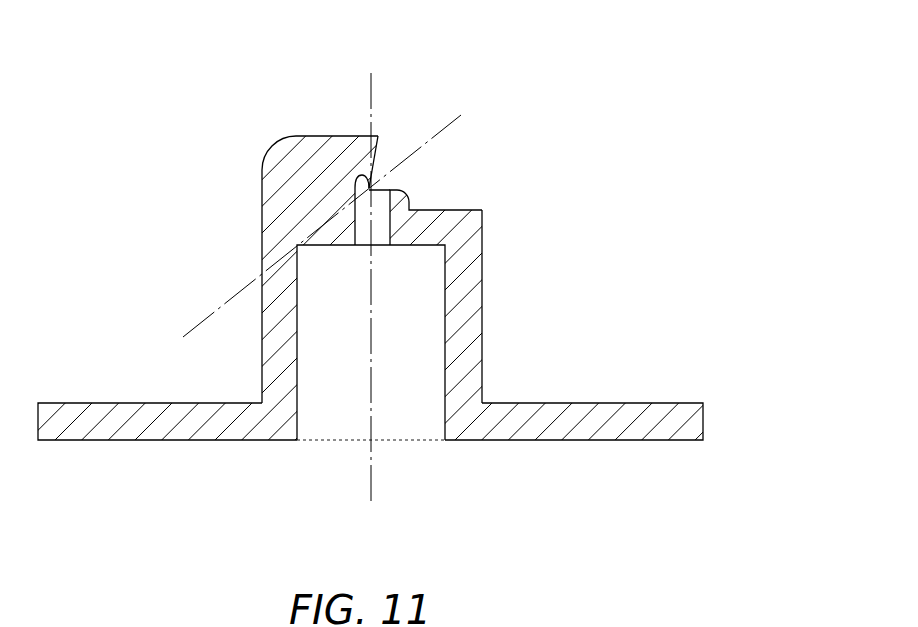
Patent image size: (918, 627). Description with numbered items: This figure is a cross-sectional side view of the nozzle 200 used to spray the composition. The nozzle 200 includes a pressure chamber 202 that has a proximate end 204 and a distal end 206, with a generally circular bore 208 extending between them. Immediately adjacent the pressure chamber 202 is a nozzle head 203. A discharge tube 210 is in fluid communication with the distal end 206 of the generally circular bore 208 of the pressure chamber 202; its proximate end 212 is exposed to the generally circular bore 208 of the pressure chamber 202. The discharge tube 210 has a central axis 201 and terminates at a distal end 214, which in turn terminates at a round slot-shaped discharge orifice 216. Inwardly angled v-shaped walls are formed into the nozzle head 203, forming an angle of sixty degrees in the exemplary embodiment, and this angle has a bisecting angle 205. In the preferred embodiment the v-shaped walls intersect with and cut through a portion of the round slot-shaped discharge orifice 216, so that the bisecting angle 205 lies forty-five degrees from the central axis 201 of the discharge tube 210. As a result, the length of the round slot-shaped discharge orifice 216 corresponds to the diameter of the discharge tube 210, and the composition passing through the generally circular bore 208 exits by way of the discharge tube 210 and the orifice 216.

The nozzle 200 is at (531, 142).
The central axis 201 is at (370, 82).
The pressure chamber 202 is at (445, 360).
The nozzle head 203 is at (260, 243).
The proximate end 204 is at (298, 440).
The bisecting angle 205 is at (452, 122).
The distal end 206 is at (445, 245).
The generally circular bore 208 is at (408, 438).
The discharge tube 210 is at (355, 218).
The proximate end 212 is at (405, 215).
The distal end 214 is at (370, 190).
The round slot-shaped discharge orifice 216 is at (369, 192).